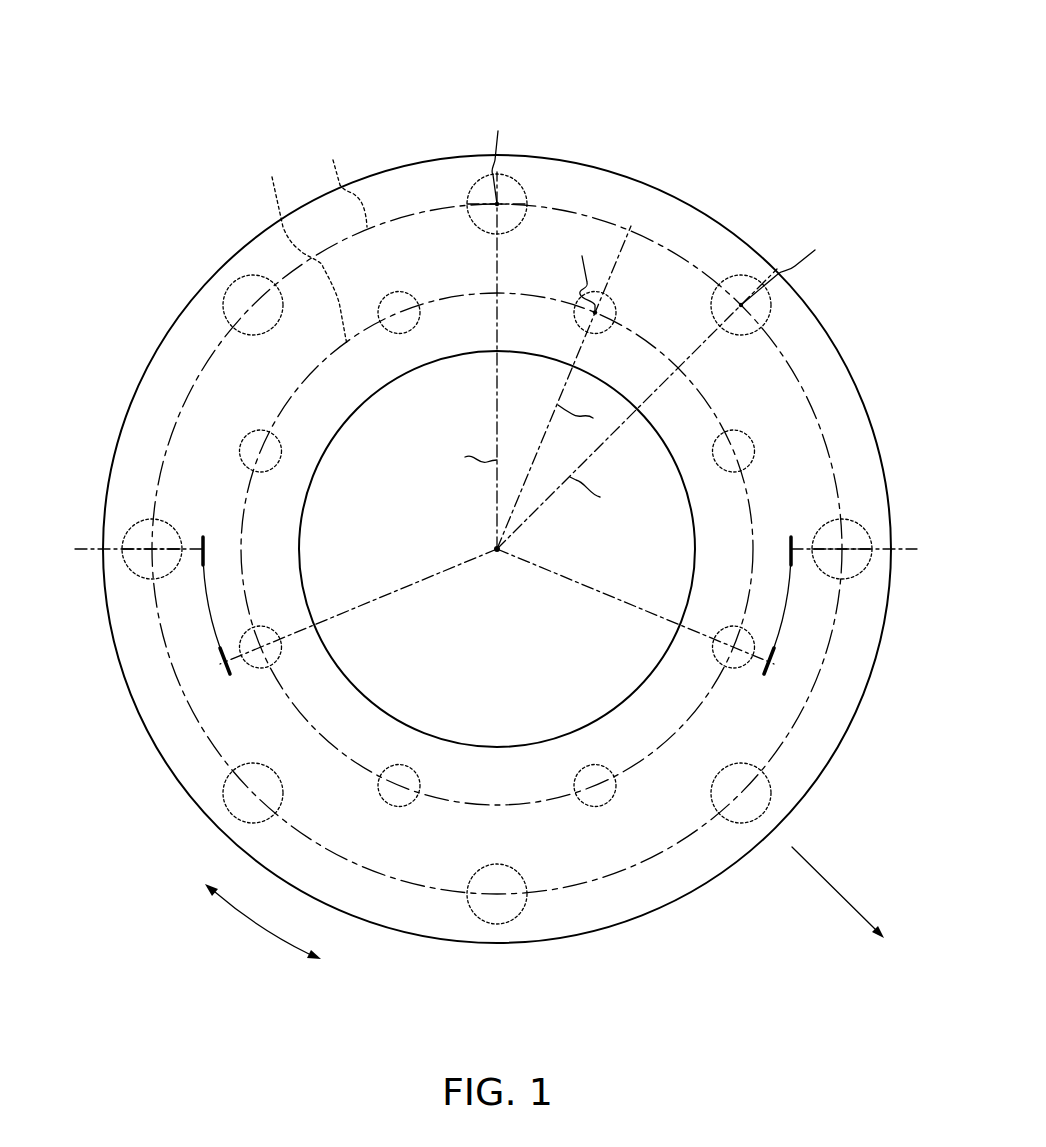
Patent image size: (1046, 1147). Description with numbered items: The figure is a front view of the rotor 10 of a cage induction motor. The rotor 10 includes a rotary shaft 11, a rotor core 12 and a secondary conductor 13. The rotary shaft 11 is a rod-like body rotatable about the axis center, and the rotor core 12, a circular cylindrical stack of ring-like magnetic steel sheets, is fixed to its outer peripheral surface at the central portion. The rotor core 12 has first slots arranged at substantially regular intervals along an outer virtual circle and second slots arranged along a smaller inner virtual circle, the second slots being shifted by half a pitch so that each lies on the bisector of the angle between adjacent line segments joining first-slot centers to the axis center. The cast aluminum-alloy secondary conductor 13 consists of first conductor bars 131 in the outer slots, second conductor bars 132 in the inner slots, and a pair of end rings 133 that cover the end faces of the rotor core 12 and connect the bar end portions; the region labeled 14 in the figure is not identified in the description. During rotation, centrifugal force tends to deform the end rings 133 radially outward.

The rotor 10 is at (643, 50).
The rotary shaft 11 is at (655, 440).
The rotor core 12 is at (837, 345).
The secondary conductor 13 is at (504, 564).
The first conductor bars 131 is at (522, 203).
The second conductor bars 132 is at (410, 292).
The end rings 133 is at (645, 197).
The annular intermediate region 14 is at (703, 728).